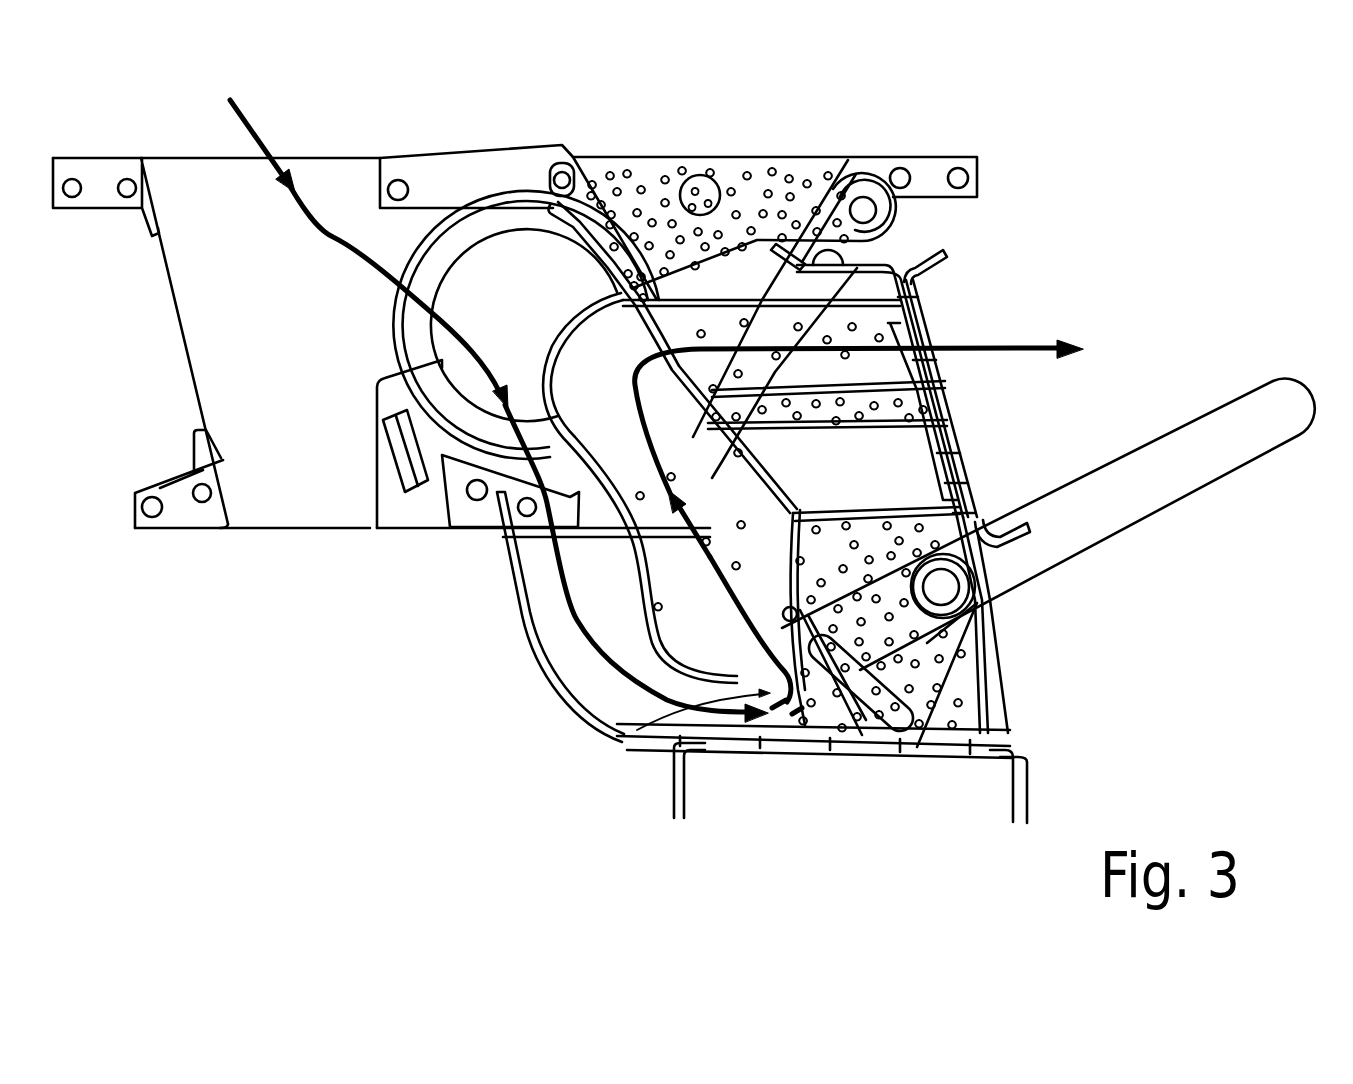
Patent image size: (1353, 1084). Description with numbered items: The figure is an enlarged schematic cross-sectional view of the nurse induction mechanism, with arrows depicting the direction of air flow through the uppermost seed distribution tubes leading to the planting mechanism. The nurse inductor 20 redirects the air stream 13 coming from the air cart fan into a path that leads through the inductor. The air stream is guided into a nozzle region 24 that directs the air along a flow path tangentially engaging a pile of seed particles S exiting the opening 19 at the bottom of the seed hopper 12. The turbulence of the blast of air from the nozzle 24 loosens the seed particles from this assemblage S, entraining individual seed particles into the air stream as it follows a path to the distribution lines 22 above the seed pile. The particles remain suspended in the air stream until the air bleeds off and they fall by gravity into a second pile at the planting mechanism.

The seed hopper 12 is at (753, 157).
The air stream 13 is at (330, 237).
The opening 19 is at (623, 742).
The nurse inductor 20 is at (432, 732).
The distribution lines 22 is at (922, 323).
The nozzle region 24 is at (720, 717).
The seed particles S is at (770, 730).